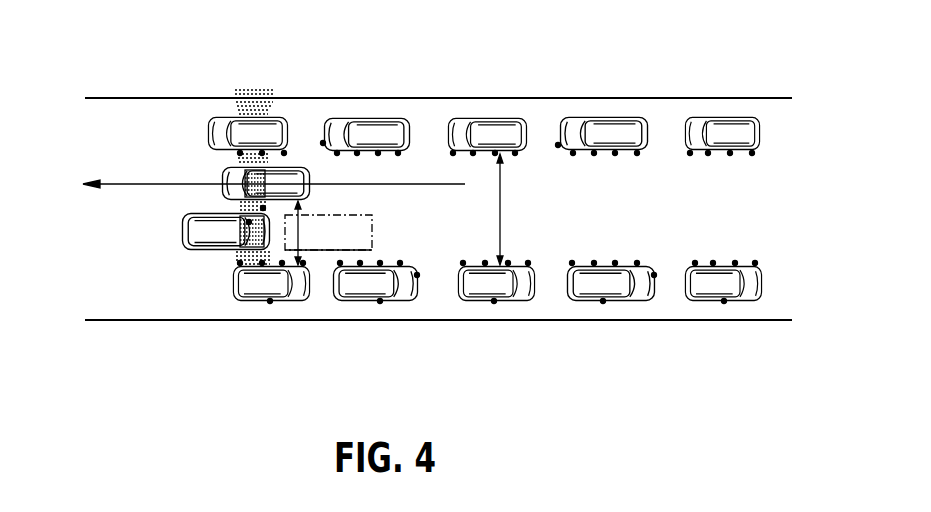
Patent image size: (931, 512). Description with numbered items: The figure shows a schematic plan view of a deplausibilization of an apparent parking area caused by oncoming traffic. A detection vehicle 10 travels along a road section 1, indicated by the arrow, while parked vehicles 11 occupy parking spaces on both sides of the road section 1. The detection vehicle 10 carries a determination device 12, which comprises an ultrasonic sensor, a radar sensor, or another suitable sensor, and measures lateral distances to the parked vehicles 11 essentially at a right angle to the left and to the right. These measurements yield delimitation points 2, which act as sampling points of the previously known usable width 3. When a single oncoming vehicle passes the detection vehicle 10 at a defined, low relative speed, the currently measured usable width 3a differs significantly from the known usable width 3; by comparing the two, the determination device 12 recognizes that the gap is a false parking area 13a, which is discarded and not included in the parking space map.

The road section 1 is at (127, 98).
The delimitation points 2 is at (558, 150).
The usable width 3 is at (498, 213).
The currently measured usable width 3a is at (300, 226).
The detection vehicle 10 is at (310, 189).
The parked vehicles 11 is at (252, 125).
The determination device 12 is at (243, 179).
The false parking area 13a is at (330, 251).